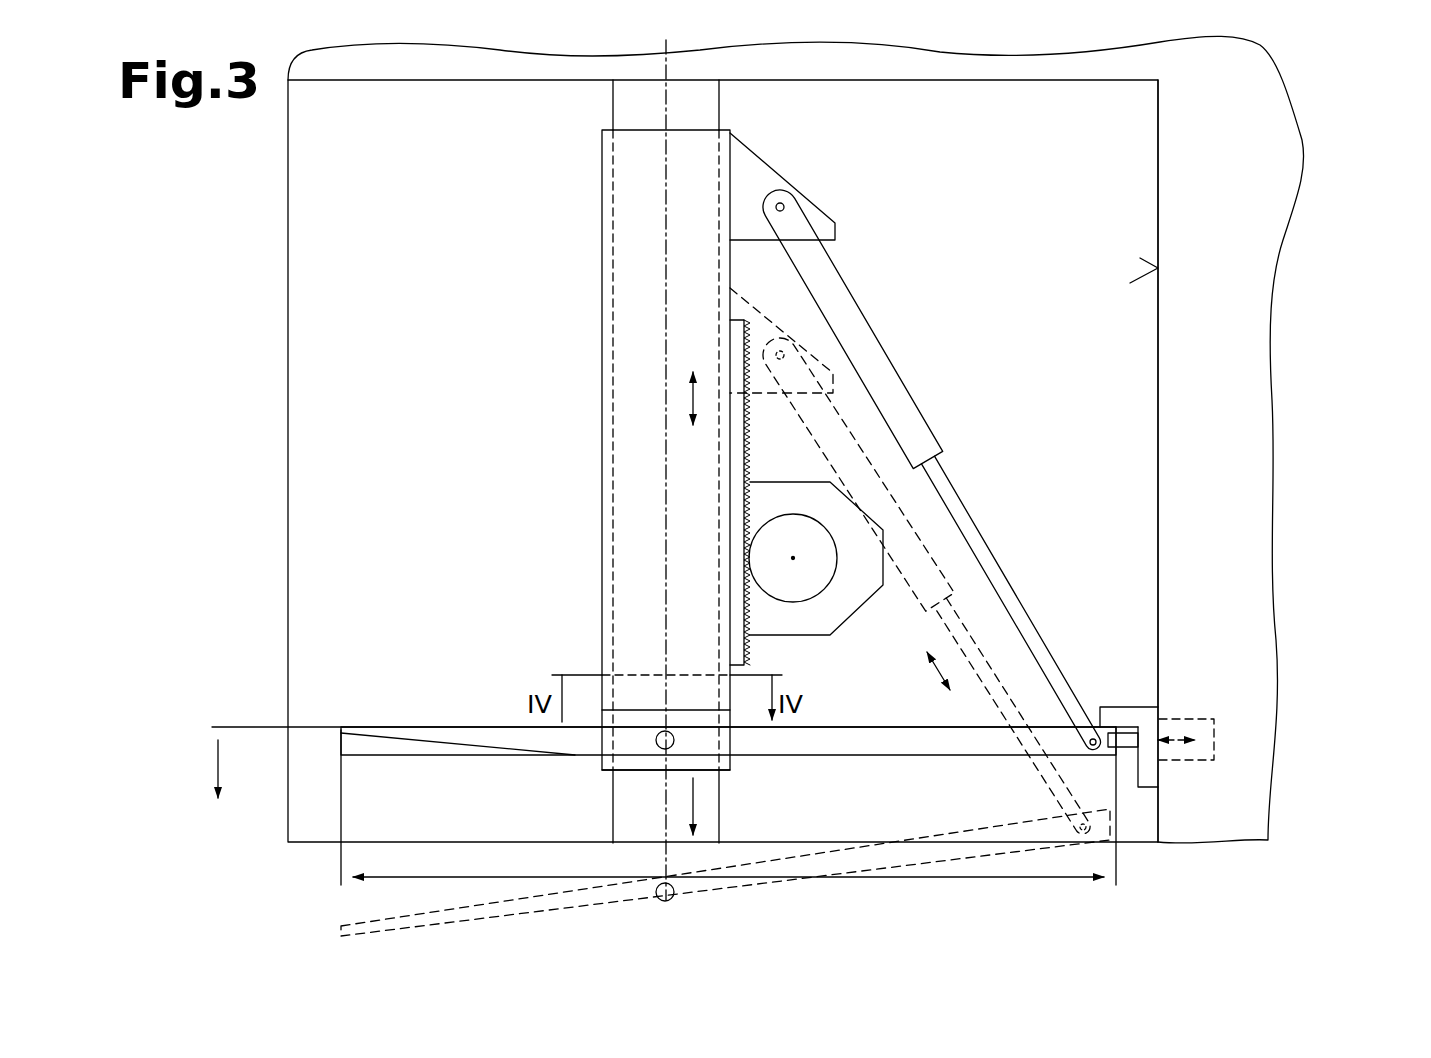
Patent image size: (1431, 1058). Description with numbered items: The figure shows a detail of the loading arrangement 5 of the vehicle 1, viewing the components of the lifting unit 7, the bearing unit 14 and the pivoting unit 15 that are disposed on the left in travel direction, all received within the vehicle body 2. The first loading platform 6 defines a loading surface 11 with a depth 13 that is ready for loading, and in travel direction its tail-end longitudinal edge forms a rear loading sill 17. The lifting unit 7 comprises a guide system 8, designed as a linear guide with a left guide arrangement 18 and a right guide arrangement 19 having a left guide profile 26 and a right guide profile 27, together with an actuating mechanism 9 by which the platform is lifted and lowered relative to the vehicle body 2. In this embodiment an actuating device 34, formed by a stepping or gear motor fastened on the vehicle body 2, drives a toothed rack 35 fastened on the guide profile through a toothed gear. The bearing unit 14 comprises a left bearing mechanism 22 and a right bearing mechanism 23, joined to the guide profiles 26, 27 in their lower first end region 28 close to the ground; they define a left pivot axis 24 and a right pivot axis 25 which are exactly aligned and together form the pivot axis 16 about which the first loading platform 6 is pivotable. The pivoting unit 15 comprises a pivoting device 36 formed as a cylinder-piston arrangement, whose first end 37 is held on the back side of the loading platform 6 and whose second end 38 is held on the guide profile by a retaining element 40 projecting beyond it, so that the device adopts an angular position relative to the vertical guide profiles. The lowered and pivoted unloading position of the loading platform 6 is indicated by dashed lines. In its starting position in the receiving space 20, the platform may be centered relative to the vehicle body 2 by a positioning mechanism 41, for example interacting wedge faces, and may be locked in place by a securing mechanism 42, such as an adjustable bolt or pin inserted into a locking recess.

The vehicle 1 is at (622, 461).
The vehicle body 2 is at (1257, 237).
The loading arrangement 5 is at (248, 200).
The first loading platform 6 is at (455, 737).
The lifting unit 7 is at (723, 461).
The guide system 8 is at (505, 372).
The actuating mechanism 9 is at (880, 493).
The loading surface 11 is at (365, 727).
The depth 13 is at (985, 880).
The bearing unit 14 is at (526, 732).
The pivoting unit 15 is at (984, 512).
The pivot axis 16 is at (553, 660).
The rear loading sill 17 is at (341, 731).
The left guide arrangement 18 is at (554, 461).
The right guide arrangement 19 is at (577, 470).
The receiving space 20 is at (1162, 270).
The left bearing mechanism 22 is at (526, 732).
The right bearing mechanism 23 is at (592, 713).
The left pivot axis 24 is at (553, 660).
The right pivot axis 25 is at (660, 734).
The left guide profile 26 is at (500, 470).
The right guide profile 27 is at (655, 525).
The lower first end region 28 is at (637, 762).
The actuating device 34 is at (808, 563).
The toothed rack 35 is at (737, 377).
The pivoting device 36 is at (862, 338).
The first end 37 is at (1093, 735).
The second end 38 is at (790, 205).
The retaining element 40 is at (742, 190).
The positioning mechanism 41 is at (1140, 713).
The securing mechanism 42 is at (1213, 722).